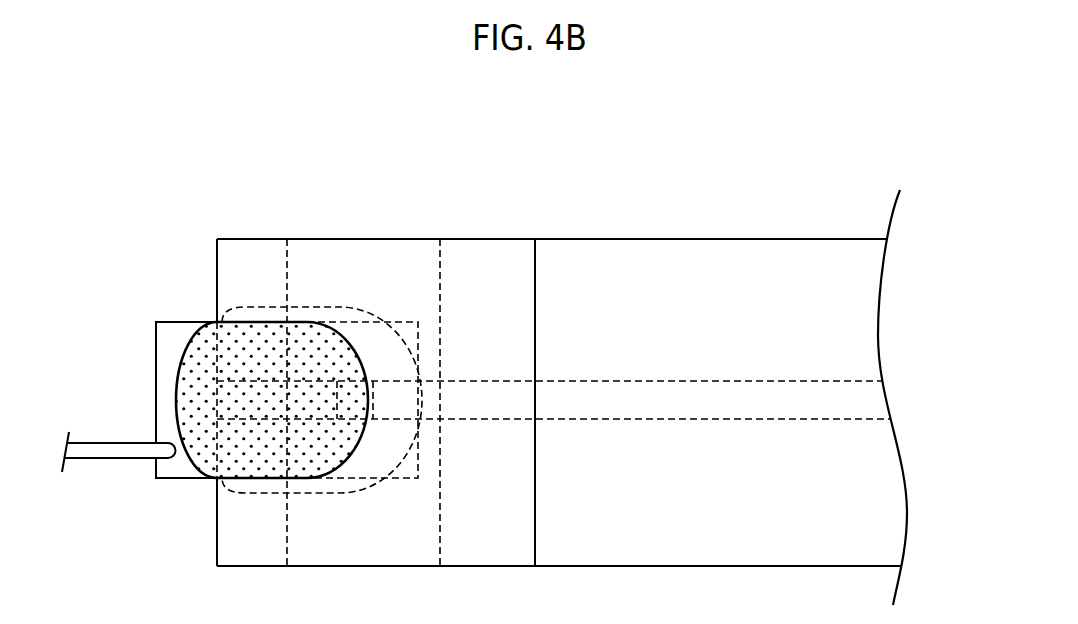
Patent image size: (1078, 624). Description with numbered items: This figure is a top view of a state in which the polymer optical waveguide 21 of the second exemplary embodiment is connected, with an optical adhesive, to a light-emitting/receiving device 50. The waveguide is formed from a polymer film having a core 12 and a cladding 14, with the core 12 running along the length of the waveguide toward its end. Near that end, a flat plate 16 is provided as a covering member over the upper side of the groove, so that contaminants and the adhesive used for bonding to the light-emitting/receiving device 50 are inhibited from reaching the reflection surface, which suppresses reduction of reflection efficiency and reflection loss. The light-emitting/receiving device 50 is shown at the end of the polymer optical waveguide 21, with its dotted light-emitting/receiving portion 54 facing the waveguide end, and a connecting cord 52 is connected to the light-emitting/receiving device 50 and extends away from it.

The core 12 is at (632, 398).
The cladding 14 is at (817, 258).
The flat plate 16 is at (503, 258).
The polymer optical waveguide 21 is at (726, 229).
The light-emitting/receiving device 50 is at (190, 482).
The connecting cord 52 is at (105, 460).
The light emitting portion 54 is at (190, 390).